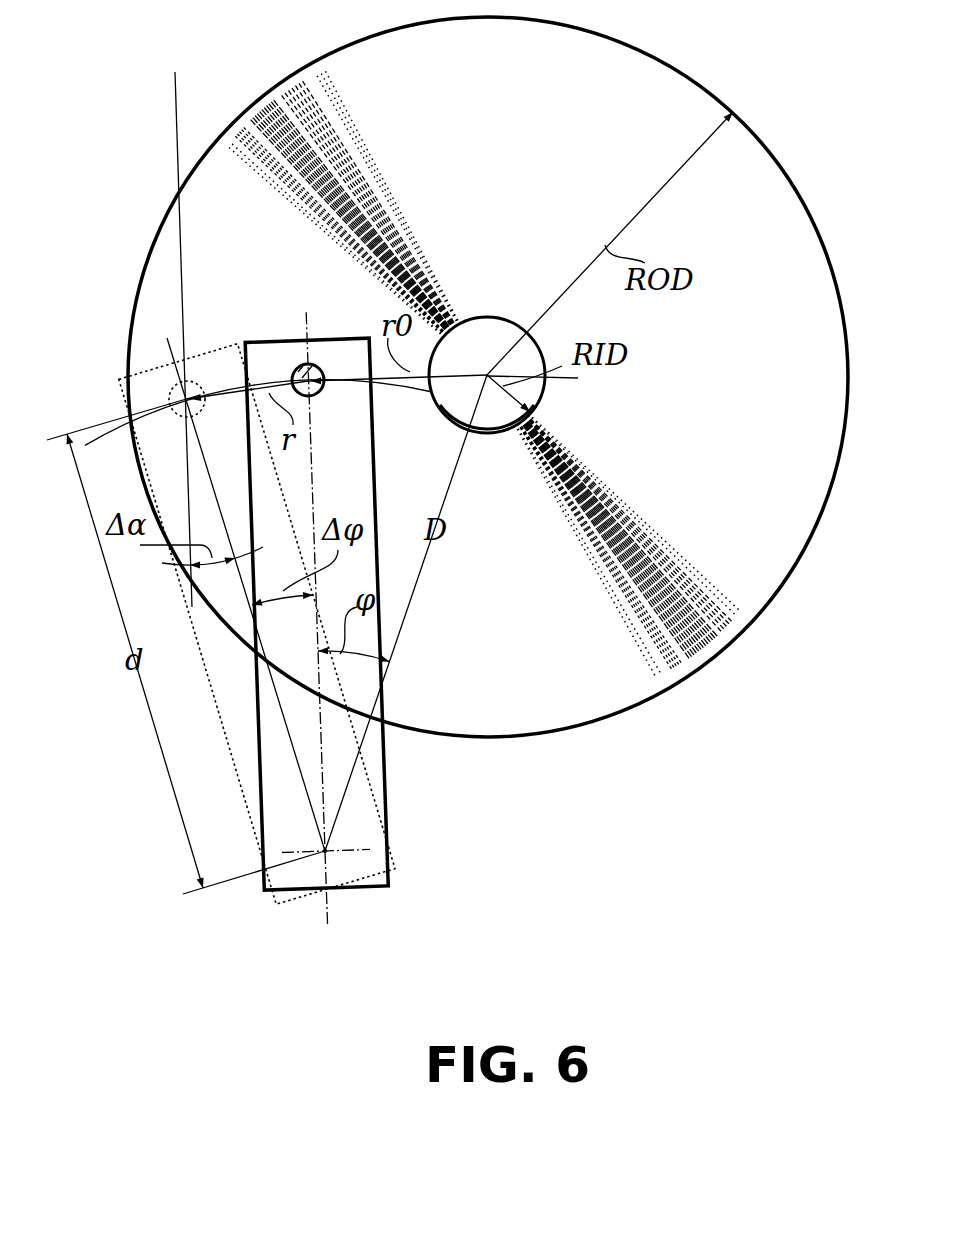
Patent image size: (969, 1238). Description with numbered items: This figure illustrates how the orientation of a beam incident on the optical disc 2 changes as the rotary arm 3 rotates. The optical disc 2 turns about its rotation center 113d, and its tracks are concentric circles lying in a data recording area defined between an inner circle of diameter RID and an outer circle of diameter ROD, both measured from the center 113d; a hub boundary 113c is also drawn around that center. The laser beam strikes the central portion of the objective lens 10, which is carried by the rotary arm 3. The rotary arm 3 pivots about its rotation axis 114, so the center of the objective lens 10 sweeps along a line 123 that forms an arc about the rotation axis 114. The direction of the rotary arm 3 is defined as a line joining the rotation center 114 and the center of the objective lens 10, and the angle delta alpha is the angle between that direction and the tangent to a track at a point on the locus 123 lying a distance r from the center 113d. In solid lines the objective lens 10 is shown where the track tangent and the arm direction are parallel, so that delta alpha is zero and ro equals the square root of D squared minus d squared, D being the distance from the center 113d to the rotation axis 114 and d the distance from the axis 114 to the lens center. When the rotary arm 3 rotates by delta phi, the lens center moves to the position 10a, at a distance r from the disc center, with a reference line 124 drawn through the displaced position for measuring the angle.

The optical disc 2 is at (752, 563).
The rotary arm 3 is at (389, 800).
The objective lens 10 is at (345, 340).
The position of the objective lens after rotation 10a is at (200, 383).
The hub outer edge 113c is at (482, 317).
The rotation center of the optical disc 113d is at (482, 434).
The rotation axis of the rotary arm 114 is at (328, 853).
The locus of the center of the objective lens 123 is at (92, 440).
The reference line 124 is at (177, 121).